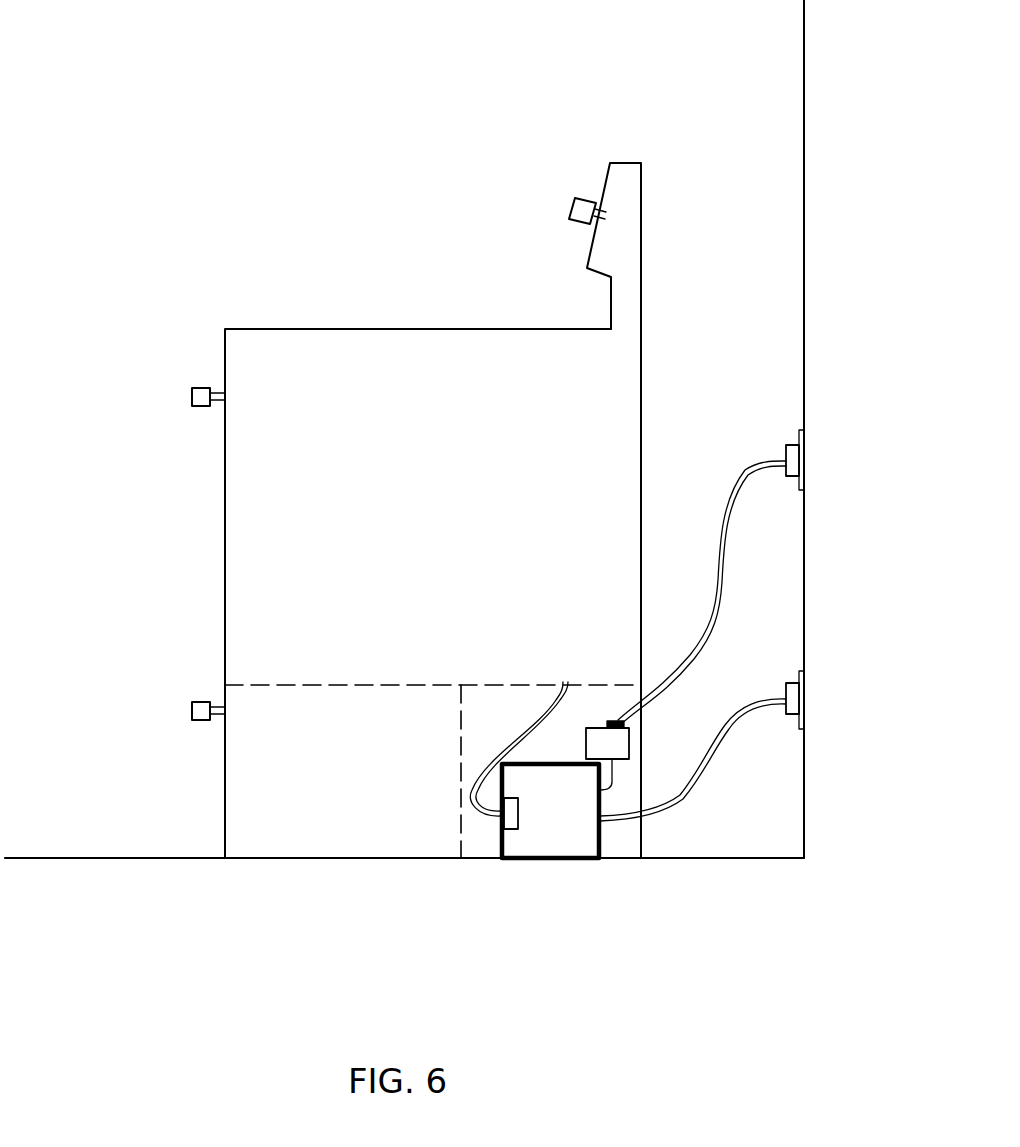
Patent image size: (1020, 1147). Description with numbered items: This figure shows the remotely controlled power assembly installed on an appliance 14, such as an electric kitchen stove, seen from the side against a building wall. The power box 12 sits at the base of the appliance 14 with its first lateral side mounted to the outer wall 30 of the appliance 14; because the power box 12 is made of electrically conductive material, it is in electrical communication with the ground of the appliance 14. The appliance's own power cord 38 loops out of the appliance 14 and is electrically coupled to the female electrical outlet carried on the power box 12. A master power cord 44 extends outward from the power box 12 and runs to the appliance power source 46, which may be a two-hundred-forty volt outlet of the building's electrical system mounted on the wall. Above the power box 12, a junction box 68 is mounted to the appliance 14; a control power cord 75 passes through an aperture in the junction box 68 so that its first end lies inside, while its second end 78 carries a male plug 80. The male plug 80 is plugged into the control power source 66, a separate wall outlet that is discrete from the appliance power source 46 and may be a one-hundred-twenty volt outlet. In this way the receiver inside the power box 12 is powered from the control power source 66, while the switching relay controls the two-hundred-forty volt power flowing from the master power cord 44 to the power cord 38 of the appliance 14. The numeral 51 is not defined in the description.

The power box 12 is at (500, 845).
The appliance 14 is at (294, 329).
The outer wall 30 is at (438, 365).
The power cord 38 is at (500, 773).
The master power cord 44 is at (727, 733).
The appliance power source 46 is at (795, 716).
The cable 51 is at (705, 775).
The control power source 66 is at (790, 445).
The junction box 68 is at (629, 747).
The control power cord 75 is at (717, 590).
The second end 78 is at (785, 478).
The male plug 80 is at (786, 447).